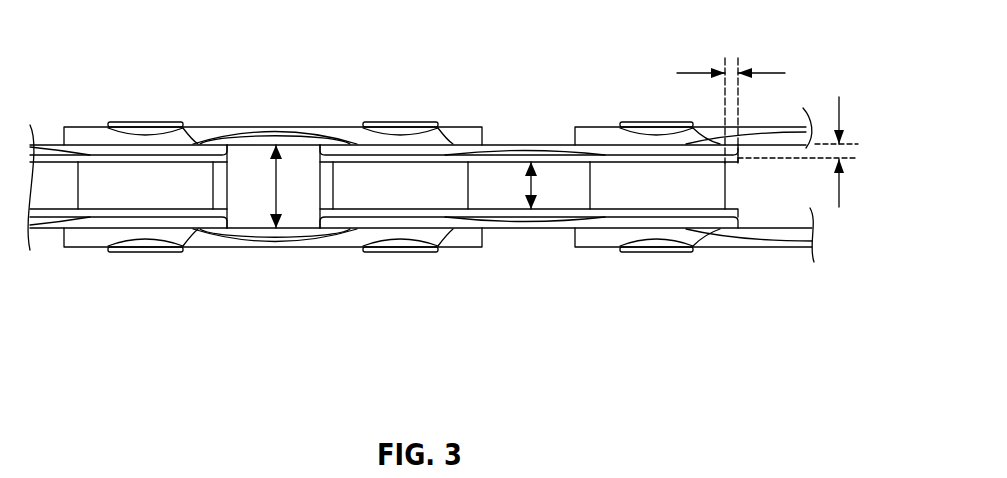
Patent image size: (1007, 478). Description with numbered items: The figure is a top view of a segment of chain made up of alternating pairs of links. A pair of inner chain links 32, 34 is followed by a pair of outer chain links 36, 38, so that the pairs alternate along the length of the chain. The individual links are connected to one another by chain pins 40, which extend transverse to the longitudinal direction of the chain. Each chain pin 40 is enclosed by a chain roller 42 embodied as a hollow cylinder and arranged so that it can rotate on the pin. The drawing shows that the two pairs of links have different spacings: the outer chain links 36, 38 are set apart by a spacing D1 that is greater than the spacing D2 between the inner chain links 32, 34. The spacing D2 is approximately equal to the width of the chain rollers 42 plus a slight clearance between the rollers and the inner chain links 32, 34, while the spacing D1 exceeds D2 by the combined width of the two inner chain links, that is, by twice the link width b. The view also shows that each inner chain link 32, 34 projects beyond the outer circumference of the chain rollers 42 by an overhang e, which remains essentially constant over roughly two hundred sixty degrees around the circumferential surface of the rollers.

The inner chain link 32 is at (537, 219).
The inner chain link 34 is at (537, 143).
The outer chain link 36 is at (290, 233).
The outer chain link 38 is at (274, 127).
The chain pin 40 is at (157, 122).
The chain roller 42 is at (103, 200).
The spacing between outer chain links D1 is at (272, 187).
The spacing between inner chain links D2 is at (526, 188).
The overhang e is at (767, 73).
The width of an inner chain link b is at (840, 189).